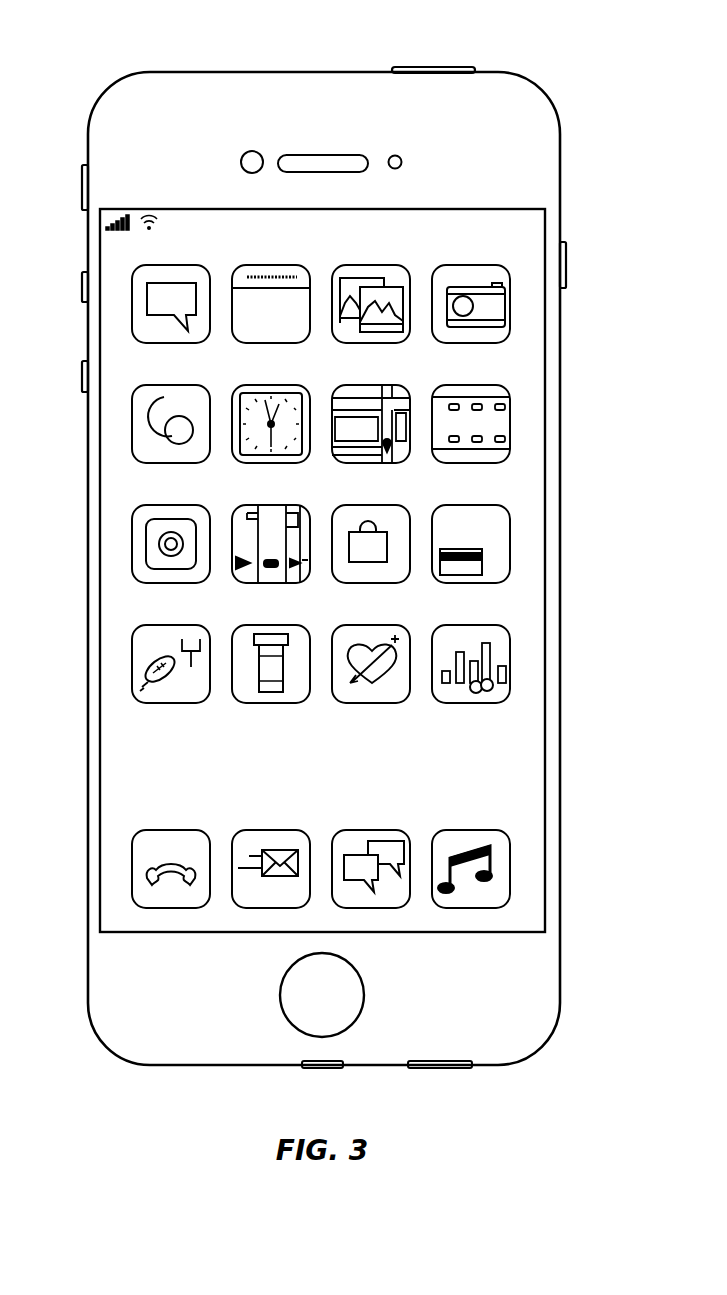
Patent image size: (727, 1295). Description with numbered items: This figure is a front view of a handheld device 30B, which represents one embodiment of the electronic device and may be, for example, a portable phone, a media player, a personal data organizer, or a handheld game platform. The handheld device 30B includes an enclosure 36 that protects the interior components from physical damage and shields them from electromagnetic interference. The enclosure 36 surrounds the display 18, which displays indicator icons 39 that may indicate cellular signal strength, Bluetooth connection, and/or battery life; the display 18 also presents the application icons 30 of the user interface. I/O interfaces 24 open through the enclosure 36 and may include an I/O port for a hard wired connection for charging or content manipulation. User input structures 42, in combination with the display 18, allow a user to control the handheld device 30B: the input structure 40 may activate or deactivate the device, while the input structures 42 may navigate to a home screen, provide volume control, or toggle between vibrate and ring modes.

The handheld device 30B is at (93, 73).
The enclosure 36 is at (561, 166).
The input structure 40 is at (429, 66).
The user input structures 42 is at (82, 186).
The I/O interfaces 24 is at (323, 1069).
The display 18 is at (548, 620).
The indicator icons 39 is at (132, 209).
The application icons 30 is at (525, 363).